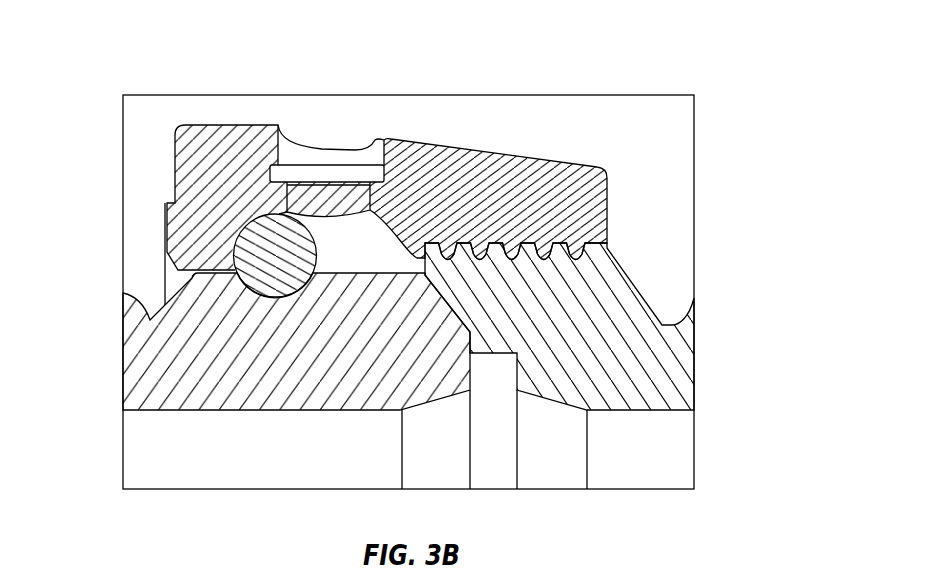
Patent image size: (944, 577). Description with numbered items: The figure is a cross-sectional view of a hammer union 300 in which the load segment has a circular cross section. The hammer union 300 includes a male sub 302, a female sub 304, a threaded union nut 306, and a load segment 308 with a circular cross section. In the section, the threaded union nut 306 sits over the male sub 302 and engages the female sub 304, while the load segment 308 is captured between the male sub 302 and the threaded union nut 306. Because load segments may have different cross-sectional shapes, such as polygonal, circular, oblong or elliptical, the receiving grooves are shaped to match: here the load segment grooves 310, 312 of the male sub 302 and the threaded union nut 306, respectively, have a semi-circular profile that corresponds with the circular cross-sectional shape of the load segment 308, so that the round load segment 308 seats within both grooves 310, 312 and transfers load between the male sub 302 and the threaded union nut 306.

The hammer union 300 is at (561, 62).
The male sub 302 is at (123, 294).
The female sub 304 is at (694, 300).
The threaded union nut 306 is at (481, 152).
The load segment 308 is at (244, 246).
The load segment groove 310 is at (267, 301).
The load segment groove 312 is at (402, 214).